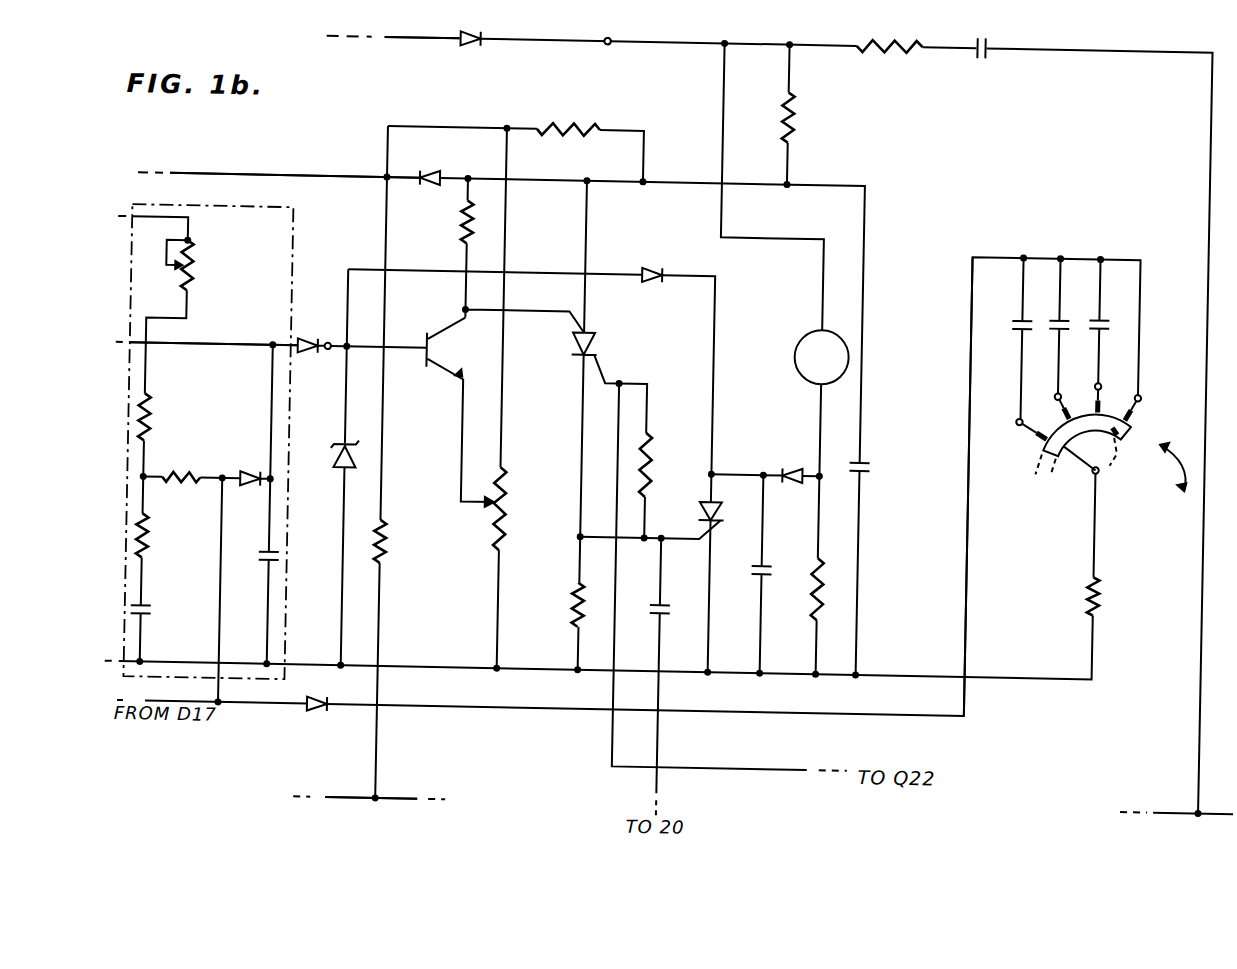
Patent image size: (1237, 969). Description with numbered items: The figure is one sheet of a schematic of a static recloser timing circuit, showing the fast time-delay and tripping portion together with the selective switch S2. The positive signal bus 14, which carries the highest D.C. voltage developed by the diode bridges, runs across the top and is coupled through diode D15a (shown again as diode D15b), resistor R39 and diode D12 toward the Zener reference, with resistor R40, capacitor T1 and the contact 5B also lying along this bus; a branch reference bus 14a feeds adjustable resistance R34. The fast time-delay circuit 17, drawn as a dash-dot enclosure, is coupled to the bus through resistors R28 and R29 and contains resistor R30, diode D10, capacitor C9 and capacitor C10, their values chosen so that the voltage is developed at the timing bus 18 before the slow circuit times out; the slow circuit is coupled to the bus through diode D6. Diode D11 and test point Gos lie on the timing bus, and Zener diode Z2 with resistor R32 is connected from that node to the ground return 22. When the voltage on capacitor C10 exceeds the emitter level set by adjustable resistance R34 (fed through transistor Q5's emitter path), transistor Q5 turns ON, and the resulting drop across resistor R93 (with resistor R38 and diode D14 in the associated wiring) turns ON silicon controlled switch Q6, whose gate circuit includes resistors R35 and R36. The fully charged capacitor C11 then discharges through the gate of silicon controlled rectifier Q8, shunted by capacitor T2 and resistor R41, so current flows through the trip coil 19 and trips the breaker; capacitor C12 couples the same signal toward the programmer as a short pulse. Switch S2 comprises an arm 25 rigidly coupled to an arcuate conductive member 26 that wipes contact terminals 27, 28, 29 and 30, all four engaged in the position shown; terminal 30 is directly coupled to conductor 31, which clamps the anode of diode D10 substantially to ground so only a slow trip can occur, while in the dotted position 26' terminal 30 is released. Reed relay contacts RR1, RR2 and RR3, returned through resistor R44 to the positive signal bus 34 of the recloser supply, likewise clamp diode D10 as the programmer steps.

The positive signal bus 14 is at (394, 39).
The reference bus 14a is at (298, 177).
The fast time-delay circuit 17 is at (296, 252).
The timing bus 18 is at (238, 344).
The trip coil 19 is at (798, 351).
The ground connection 22 is at (402, 798).
The arm 25 is at (1098, 461).
The arcuate conductive member 26 is at (1028, 469).
The arcuate conductive member in next position 26' is at (1128, 458).
The contact terminal 27 is at (1048, 416).
The contact terminal 28 is at (1071, 392).
The contact terminal 29 is at (1105, 383).
The contact terminal 30 is at (1141, 405).
The conductor 31 is at (970, 576).
The positive signal bus 34 is at (1163, 798).
The contact 5B is at (604, 41).
The selective switch S2 is at (1095, 444).
The transistor Q5 is at (461, 412).
The silicon controlled switch Q6 is at (599, 349).
The silicon controlled rectifier Q8 is at (704, 508).
The zener diode Z2 is at (327, 461).
The diode D6 is at (323, 714).
The diode D10 is at (246, 490).
The diode D11 is at (309, 357).
The diode D12 is at (432, 171).
The diode D14 is at (655, 280).
The diode D15a is at (470, 44).
The diode D15b is at (795, 462).
The resistor R28 is at (192, 254).
The resistor R29 is at (158, 423).
The resistor R30 is at (155, 540).
The resistor R32 is at (393, 548).
The adjustable resistance R34 is at (513, 508).
The resistor R35 is at (578, 600).
The resistor R36 is at (659, 461).
The resistor R38 is at (575, 123).
The resistor R39 is at (794, 112).
The resistor R40 is at (889, 46).
The resistor R41 is at (815, 588).
The resistor R44 is at (1108, 588).
The resistor R93 is at (458, 222).
The capacitor C9 is at (157, 614).
The capacitor C10 is at (254, 567).
The capacitor C11 is at (870, 459).
The capacitor C12 is at (681, 604).
The capacitor T1 is at (988, 64).
The capacitor T2 is at (758, 570).
The reed relay contact pair RR1 is at (1127, 295).
The capacitor RR2/3 RR2 is at (1089, 295).
The capacitor RR3/3 RR3 is at (1052, 295).
The test point Gos is at (314, 322).